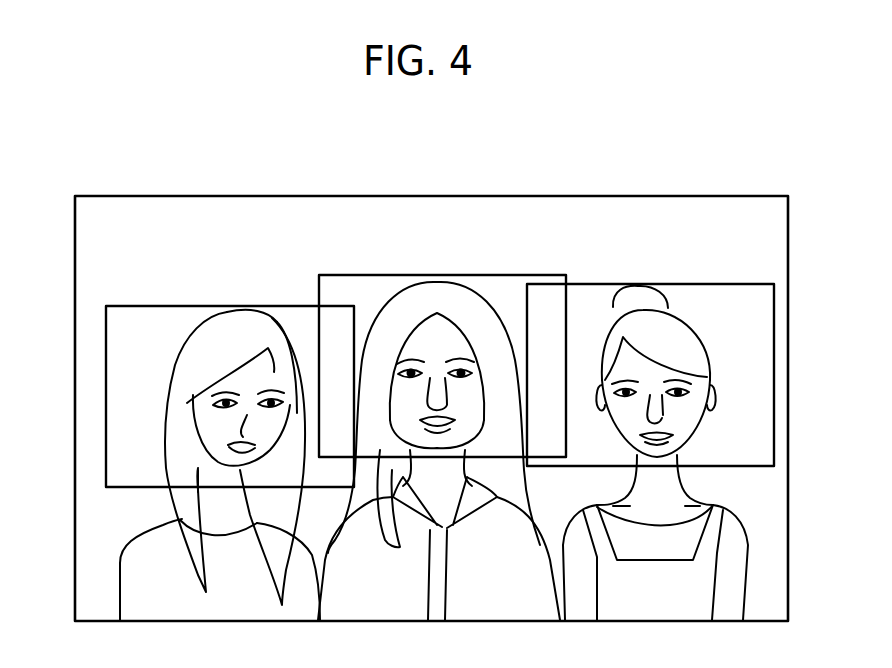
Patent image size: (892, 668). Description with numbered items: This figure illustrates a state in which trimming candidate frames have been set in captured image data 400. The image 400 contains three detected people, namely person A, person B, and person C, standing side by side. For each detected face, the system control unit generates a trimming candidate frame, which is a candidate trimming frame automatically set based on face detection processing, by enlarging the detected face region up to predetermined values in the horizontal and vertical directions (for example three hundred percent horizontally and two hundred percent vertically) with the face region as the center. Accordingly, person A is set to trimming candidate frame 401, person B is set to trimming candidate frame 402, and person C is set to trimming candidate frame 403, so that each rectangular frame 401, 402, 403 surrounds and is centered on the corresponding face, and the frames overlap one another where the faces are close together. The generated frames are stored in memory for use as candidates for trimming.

The captured image 400 is at (561, 186).
The trimming candidate frame 401 is at (241, 306).
The trimming candidate frame 402 is at (448, 275).
The trimming candidate frame 403 is at (672, 284).
The person A is at (283, 325).
The person B is at (410, 289).
The person C is at (617, 297).